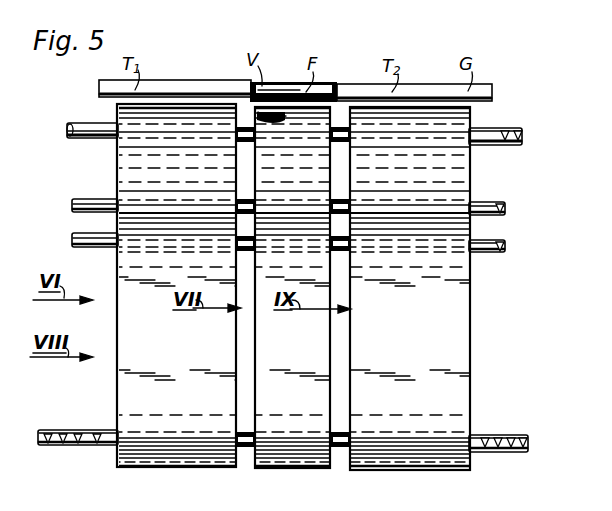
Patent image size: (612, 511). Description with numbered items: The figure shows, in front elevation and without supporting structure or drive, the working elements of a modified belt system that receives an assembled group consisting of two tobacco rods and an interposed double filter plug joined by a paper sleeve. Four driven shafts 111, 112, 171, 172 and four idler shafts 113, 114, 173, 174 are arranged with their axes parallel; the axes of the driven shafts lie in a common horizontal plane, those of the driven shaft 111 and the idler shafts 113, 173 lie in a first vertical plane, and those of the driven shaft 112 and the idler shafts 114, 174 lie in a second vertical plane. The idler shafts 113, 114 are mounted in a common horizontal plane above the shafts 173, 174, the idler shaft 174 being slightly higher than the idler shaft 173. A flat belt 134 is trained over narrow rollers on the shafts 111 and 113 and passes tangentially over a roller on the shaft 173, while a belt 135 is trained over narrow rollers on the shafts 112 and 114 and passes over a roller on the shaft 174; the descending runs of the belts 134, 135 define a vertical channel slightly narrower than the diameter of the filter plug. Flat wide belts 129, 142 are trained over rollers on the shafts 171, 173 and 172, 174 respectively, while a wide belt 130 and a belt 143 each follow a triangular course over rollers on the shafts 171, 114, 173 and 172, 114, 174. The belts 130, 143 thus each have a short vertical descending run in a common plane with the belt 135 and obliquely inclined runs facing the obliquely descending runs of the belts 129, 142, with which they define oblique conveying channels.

The driven shaft 111 is at (54, 432).
The driven shaft 112 is at (72, 446).
The idler shaft 113 is at (80, 126).
The idler shaft 114 is at (108, 139).
The flat wide belt 129 is at (192, 365).
The wide belt 130 is at (192, 181).
The flat belt 134 is at (304, 365).
The belt 135 is at (258, 118).
The flat wide belt 142 is at (426, 368).
The belt 143 is at (426, 185).
The driven shaft 171 is at (103, 413).
The driven shaft 172 is at (108, 446).
The idler shaft 173 is at (78, 241).
The idler shaft 174 is at (78, 205).